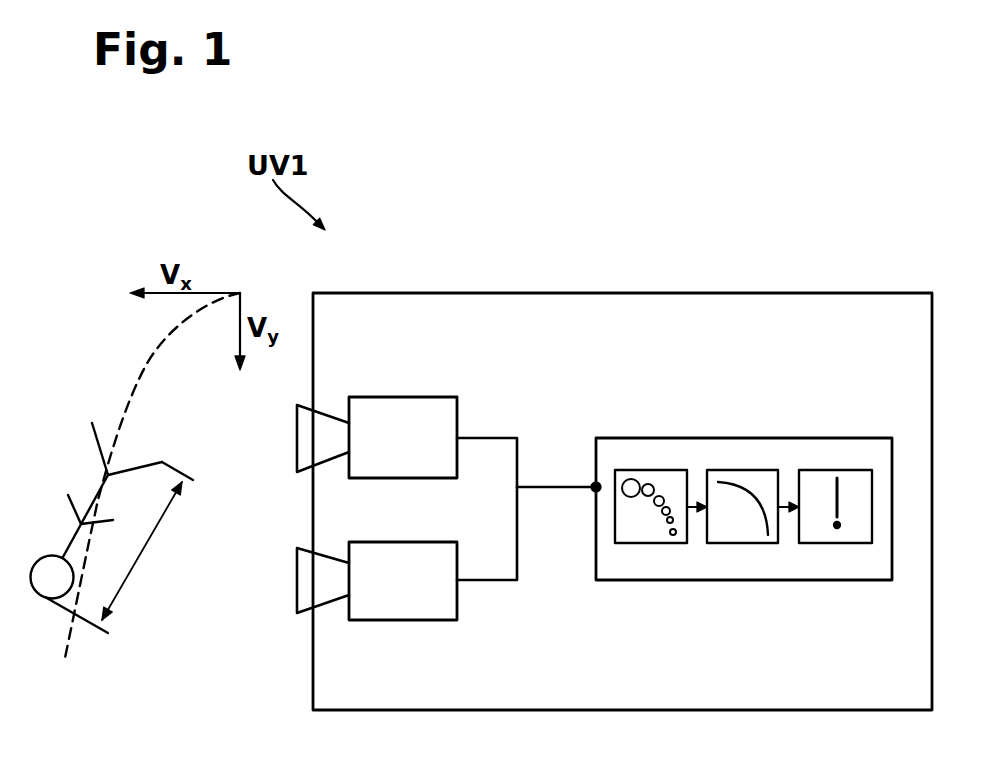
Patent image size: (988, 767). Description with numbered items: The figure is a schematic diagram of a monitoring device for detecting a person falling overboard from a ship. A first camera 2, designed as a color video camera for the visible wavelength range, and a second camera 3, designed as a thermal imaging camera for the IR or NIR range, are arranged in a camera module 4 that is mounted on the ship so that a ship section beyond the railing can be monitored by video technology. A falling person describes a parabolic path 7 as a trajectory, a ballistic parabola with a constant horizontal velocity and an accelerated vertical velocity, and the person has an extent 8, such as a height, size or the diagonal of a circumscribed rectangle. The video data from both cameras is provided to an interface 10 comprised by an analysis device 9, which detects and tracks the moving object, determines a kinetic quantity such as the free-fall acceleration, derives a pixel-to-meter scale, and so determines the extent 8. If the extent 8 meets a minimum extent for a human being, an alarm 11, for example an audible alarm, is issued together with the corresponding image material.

The first camera 2 is at (401, 397).
The second camera 3 is at (404, 622).
The camera module 4 is at (757, 293).
The parabolic path 7 is at (132, 359).
The extent 8 is at (140, 552).
The analysis device 9 is at (740, 470).
The interface 10 is at (594, 486).
The alarm 11 is at (843, 470).